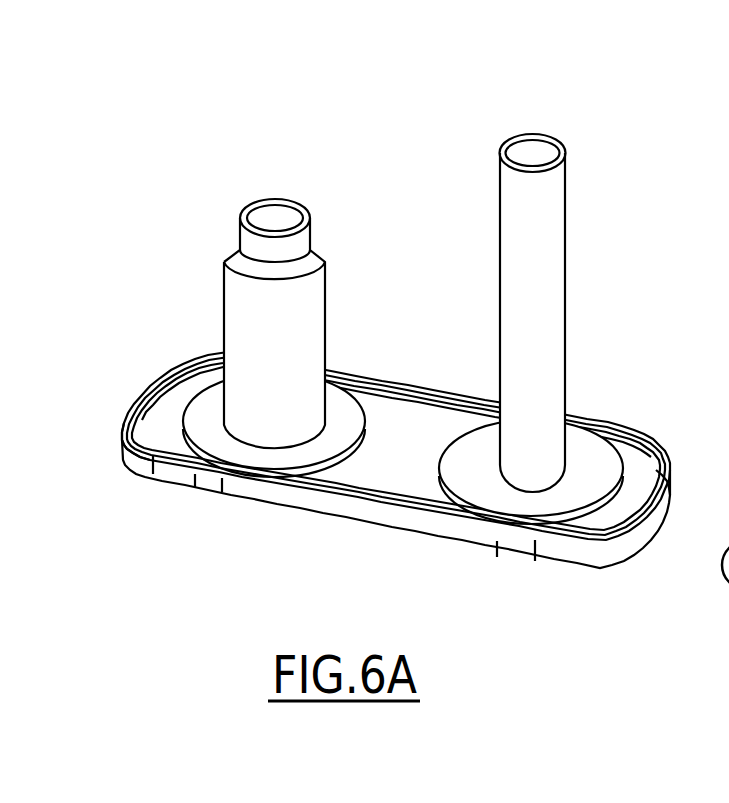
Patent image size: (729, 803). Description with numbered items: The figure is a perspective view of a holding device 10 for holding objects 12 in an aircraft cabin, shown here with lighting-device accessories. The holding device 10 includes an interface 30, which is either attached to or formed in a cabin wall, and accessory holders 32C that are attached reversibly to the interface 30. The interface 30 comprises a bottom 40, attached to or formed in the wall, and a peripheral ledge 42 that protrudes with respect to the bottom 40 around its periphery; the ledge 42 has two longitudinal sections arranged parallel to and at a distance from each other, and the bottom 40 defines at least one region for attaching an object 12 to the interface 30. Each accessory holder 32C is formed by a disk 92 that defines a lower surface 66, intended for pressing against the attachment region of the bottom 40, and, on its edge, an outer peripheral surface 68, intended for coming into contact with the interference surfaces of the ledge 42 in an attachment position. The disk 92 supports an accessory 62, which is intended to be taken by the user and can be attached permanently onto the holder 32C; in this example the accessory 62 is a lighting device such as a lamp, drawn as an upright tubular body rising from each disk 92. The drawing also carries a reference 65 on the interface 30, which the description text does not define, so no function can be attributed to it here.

The sample container assembly 10 is at (118, 178).
The tube assembly 12 is at (466, 148).
The tray 30 is at (122, 382).
The notch 32C is at (225, 488).
The rim 40 is at (402, 427).
The side wall 42 is at (630, 542).
The tube 62 is at (386, 263).
The front edge 65 is at (438, 510).
The corner 66 is at (153, 457).
The disc edge 68 is at (330, 480).
The disc 92 is at (337, 410).